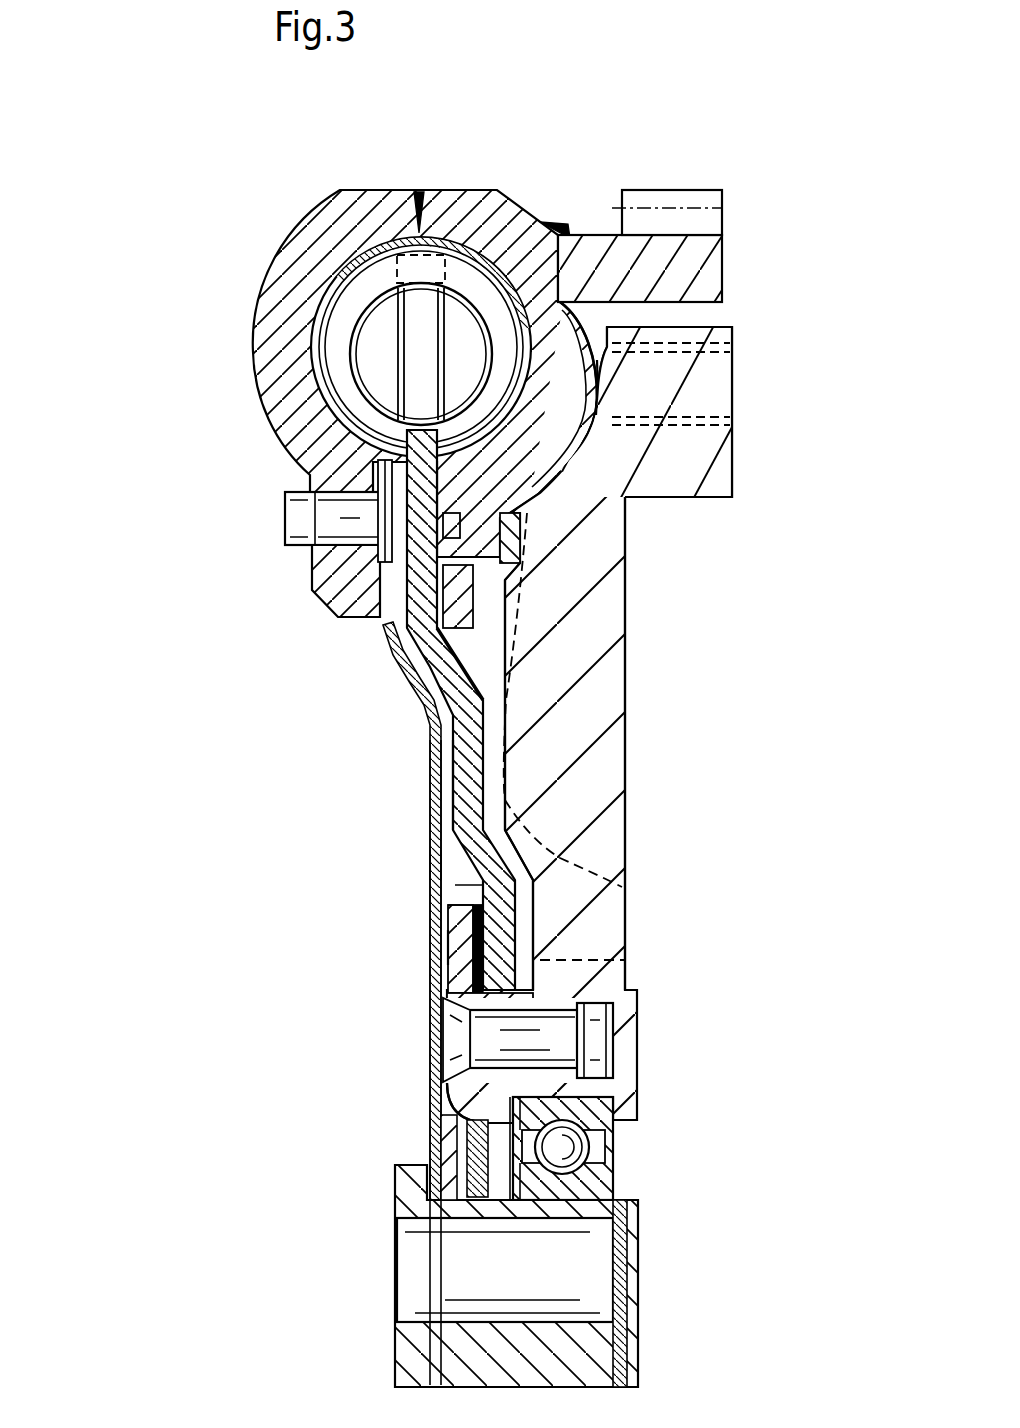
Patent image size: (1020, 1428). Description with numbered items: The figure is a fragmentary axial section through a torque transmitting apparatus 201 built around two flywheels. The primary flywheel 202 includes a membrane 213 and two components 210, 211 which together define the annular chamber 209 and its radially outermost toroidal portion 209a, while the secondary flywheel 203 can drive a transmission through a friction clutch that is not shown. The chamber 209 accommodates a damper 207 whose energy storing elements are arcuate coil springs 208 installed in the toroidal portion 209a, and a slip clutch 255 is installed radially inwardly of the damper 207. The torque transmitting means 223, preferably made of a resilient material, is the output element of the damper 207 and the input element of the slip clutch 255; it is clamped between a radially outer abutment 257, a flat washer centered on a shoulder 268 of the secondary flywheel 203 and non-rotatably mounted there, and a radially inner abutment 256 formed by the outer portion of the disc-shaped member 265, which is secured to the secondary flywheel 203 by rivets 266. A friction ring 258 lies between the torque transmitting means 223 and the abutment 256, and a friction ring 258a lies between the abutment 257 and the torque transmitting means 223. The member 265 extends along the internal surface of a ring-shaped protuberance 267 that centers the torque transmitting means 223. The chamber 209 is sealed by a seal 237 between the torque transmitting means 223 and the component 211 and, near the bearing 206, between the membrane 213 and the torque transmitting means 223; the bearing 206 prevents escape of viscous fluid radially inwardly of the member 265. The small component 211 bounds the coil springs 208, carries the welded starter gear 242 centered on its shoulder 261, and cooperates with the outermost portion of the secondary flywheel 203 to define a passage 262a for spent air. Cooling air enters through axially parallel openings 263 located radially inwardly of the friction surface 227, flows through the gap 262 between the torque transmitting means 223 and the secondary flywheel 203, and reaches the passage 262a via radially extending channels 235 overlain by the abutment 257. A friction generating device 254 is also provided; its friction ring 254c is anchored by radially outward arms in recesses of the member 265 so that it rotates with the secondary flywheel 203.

The torque transmitting apparatus 201 is at (768, 162).
The primary flywheel 202 is at (412, 705).
The secondary flywheel 203 is at (583, 708).
The bearing 206 is at (577, 1150).
The damper 207 is at (320, 440).
The arcuate coil springs 208 is at (345, 385).
The annular chamber 209 is at (400, 623).
The toroidal portion 209a is at (393, 293).
The component 210 is at (275, 325).
The component 211 is at (480, 226).
The membrane 213 is at (430, 865).
The torque transmitting means 223 is at (463, 782).
The friction surface 227 is at (627, 672).
The channels 235 is at (527, 513).
The seal 237 is at (528, 508).
The starter gear 242 is at (680, 258).
The friction generating device 254 is at (413, 1135).
The friction ring 254c is at (545, 1252).
The slip clutch 255 is at (335, 862).
The abutment 256 is at (455, 978).
The abutment 257 is at (473, 597).
The friction ring 258 is at (460, 887).
The friction ring 258a is at (387, 623).
The shoulder 261 is at (600, 302).
The gap 262 is at (497, 782).
The passage 262a is at (592, 403).
The openings 263 is at (613, 907).
The member 265 is at (467, 947).
The rivets 266 is at (557, 1023).
The protuberance 267 is at (530, 1000).
The shoulder 268 is at (403, 232).